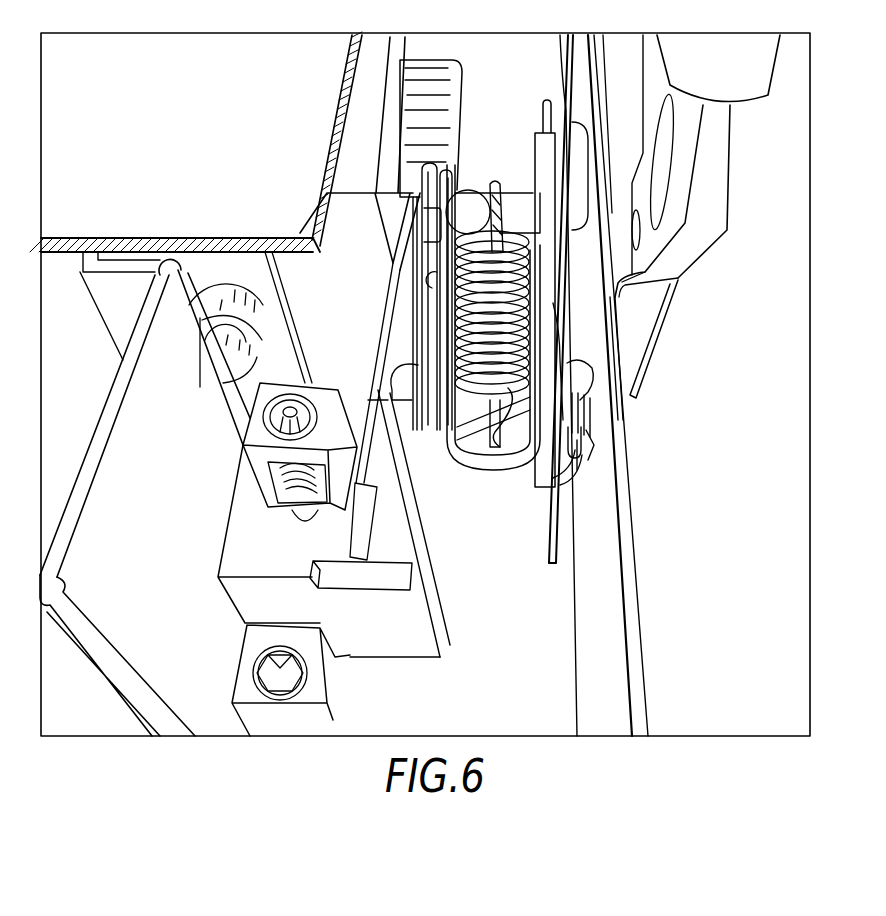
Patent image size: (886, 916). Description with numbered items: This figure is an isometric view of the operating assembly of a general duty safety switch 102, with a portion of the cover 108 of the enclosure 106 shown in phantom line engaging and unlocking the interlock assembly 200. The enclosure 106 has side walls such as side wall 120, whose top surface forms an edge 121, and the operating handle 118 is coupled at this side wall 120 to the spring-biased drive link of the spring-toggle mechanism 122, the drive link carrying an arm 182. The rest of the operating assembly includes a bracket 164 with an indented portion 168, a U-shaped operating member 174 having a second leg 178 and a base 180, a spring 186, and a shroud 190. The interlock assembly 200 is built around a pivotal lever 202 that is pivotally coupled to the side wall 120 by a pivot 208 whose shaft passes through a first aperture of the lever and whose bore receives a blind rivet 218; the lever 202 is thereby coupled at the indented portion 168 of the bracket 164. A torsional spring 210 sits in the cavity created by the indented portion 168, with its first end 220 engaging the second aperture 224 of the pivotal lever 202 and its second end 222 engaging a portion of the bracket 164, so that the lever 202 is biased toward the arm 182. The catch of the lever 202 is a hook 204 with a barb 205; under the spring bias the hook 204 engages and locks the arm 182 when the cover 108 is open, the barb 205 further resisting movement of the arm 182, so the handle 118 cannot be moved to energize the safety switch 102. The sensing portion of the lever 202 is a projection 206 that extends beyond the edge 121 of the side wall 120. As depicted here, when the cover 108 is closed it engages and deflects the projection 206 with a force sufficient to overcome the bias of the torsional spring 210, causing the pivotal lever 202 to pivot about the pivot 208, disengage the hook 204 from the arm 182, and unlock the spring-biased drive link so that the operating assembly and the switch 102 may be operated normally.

The safety switch 102 is at (679, 704).
The enclosure 106 is at (654, 606).
The cover 108 is at (305, 222).
The handle 118 is at (717, 138).
The side wall 120 is at (577, 688).
The edge 121 is at (620, 443).
The spring-toggle mechanism 122 is at (556, 198).
The bracket 164 is at (558, 565).
The indented portion 168 is at (592, 437).
The U-shaped operating member 174 is at (420, 370).
The second leg 178 is at (452, 176).
The base 180 is at (490, 468).
The arm 182 is at (518, 187).
The spring 186 is at (430, 287).
The shroud 190 is at (655, 352).
The interlock assembly 200 is at (522, 268).
The pivotal lever 202 is at (563, 472).
The hook 204 is at (557, 139).
The barb 205 is at (535, 133).
The projection 206 is at (596, 378).
The pivot 208 is at (510, 440).
The torsional spring 210 is at (600, 415).
The blind rivet 218 is at (472, 445).
The first end 220 is at (516, 324).
The second end 222 is at (577, 460).
The second aperture 224 is at (583, 337).